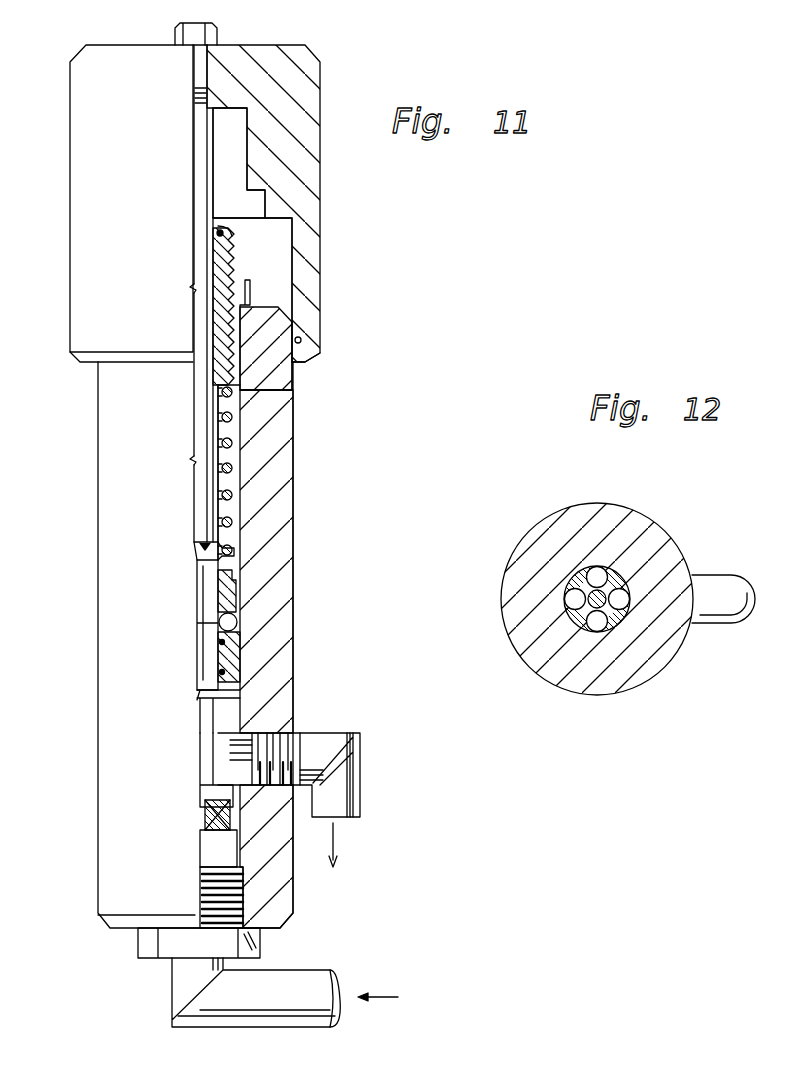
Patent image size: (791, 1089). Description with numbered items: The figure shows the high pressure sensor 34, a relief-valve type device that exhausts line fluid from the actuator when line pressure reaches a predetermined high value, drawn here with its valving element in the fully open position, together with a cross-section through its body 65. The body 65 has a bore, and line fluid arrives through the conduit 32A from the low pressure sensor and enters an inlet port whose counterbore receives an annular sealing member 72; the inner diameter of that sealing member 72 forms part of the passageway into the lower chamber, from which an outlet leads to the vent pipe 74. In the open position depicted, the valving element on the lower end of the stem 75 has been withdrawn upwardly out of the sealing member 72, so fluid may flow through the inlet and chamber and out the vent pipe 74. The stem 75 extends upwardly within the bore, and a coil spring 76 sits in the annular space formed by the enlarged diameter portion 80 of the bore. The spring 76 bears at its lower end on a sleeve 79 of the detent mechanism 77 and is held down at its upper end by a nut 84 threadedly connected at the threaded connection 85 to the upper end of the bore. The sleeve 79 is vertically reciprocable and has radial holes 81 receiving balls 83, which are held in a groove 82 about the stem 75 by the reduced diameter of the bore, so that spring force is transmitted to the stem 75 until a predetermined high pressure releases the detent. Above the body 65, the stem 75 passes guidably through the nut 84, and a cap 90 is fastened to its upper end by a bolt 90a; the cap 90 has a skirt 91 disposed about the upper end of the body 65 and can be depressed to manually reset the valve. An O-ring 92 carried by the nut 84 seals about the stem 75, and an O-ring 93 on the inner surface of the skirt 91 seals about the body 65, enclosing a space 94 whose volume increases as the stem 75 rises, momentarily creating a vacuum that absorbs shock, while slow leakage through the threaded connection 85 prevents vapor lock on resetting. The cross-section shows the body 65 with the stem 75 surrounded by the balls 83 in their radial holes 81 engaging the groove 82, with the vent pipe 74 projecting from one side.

In FIG. 11, the high pressure sensor 34 is at (92, 493).
In FIG. 11, the bolt 90a is at (218, 37).
In FIG. 11, the cap 90 is at (322, 78).
In FIG. 11, the skirt 91 is at (322, 296).
In FIG. 11, the space 94 is at (230, 123).
In FIG. 11, the threaded connection 85 is at (242, 345).
In FIG. 11, the nut 84 is at (214, 263).
In FIG. 11, the O-ring 92 is at (217, 233).
In FIG. 11, the O-ring 93 is at (302, 340).
In FIG. 11, the enlarged diameter portion of the bore 80 is at (240, 488).
In FIG. 11, the coil spring 76 is at (233, 419).
In FIG. 11, the stem 75 is at (221, 435).
In FIG. 12, the stem 75 is at (597, 627).
In FIG. 11, the groove 82 is at (224, 562).
In FIG. 12, the groove 82 is at (588, 630).
In FIG. 11, the radial holes 81 is at (200, 620).
In FIG. 12, the radial holes 81 is at (566, 600).
In FIG. 11, the balls 83 is at (237, 622).
In FIG. 12, the balls 83 is at (630, 598).
In FIG. 11, the sleeve 79 is at (232, 662).
In FIG. 12, the sleeve 79 is at (584, 572).
In FIG. 11, the detent mechanism 77 is at (222, 700).
In FIG. 11, the vent pipe 74 is at (362, 752).
In FIG. 12, the vent pipe 74 is at (722, 624).
In FIG. 11, the annular sealing member 72 is at (208, 815).
In FIG. 11, the conduit 32A is at (282, 1027).
In FIG. 12, the body 65 is at (534, 520).